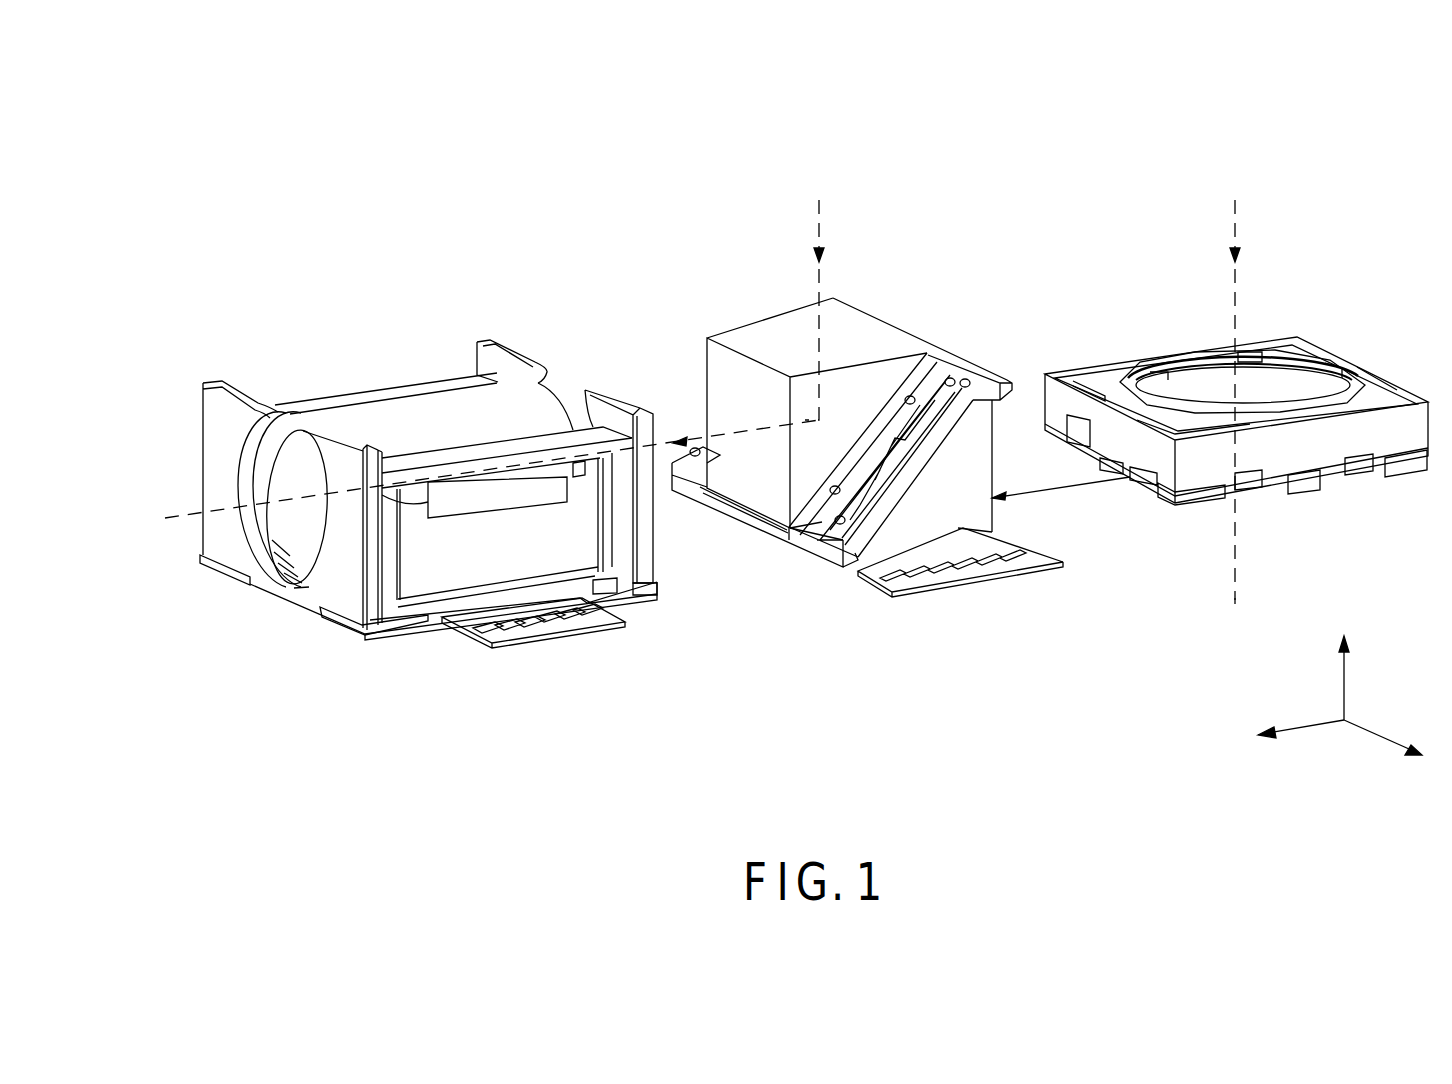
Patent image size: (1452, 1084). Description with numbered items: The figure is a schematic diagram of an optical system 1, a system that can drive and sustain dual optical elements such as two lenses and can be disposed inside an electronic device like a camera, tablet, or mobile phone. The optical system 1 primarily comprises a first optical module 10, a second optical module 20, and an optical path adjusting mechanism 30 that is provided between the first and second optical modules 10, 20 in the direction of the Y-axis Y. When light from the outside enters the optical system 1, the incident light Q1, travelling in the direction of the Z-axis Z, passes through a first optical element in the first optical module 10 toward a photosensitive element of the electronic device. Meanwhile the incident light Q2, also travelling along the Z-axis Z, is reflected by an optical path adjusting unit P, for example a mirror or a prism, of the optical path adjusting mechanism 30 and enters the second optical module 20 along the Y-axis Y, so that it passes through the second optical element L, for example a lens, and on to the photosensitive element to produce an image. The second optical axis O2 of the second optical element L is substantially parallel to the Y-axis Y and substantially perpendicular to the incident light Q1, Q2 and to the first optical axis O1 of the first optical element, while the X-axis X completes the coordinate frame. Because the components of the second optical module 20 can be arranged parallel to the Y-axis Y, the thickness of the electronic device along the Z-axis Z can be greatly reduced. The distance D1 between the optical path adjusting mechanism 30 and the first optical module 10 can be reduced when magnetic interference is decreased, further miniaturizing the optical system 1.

The optical system 1 is at (155, 125).
The first optical module 10 is at (1332, 325).
The second optical module 20 is at (517, 325).
The optical path adjusting mechanism 30 is at (927, 325).
The second optical element L is at (418, 410).
The optical path adjusting unit P is at (760, 338).
The first optical axis O1 is at (1235, 616).
The second optical axis O2 is at (470, 477).
The incident light Q1 is at (1235, 385).
The incident light Q2 is at (819, 295).
The distance D1 is at (1061, 499).
The X-axis X is at (1392, 751).
The Y-axis Y is at (1290, 733).
The Z-axis Z is at (1342, 665).